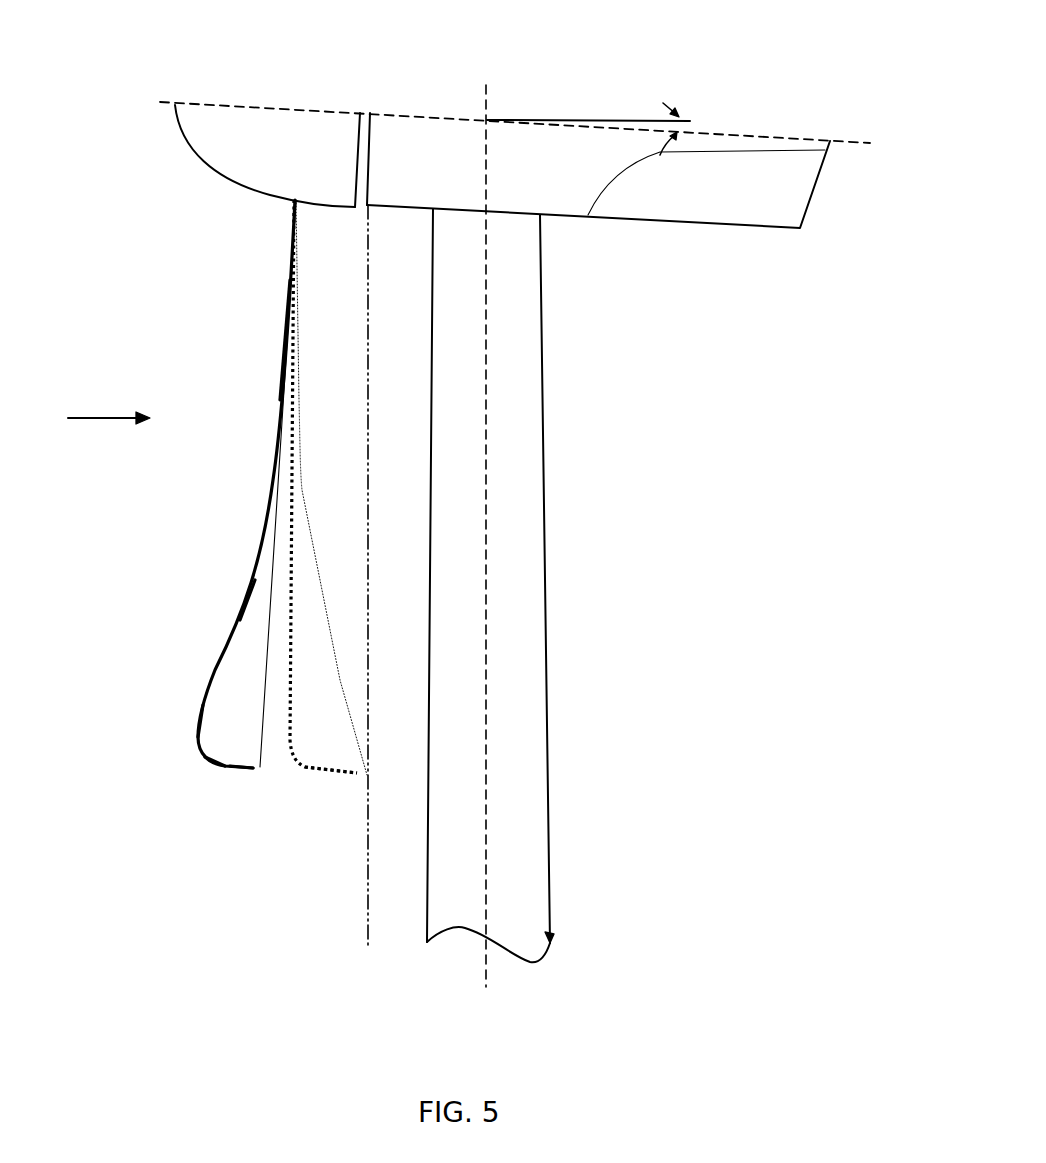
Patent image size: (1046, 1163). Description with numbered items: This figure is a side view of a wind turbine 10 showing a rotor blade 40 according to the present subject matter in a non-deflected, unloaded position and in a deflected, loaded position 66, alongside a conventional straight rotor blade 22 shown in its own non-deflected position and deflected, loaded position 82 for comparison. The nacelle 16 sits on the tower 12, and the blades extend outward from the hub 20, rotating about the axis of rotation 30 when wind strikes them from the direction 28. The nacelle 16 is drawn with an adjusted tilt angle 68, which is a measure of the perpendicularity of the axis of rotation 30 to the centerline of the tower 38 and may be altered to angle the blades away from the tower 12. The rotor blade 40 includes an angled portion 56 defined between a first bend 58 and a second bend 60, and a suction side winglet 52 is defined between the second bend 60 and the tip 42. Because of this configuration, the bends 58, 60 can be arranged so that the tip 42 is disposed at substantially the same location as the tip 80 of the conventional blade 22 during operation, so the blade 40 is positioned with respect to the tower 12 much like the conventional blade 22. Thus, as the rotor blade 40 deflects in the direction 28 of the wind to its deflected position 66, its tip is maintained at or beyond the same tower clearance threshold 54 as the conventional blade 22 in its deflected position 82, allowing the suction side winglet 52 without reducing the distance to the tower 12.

The wind turbine 10 is at (771, 90).
The tower 12 is at (545, 555).
The nacelle 16 is at (752, 185).
The hub 20 is at (247, 122).
The rotor blade 22 is at (270, 596).
The direction 28 is at (105, 418).
The axis of rotation 30 is at (413, 115).
The centerline of the tower 38 is at (489, 957).
The rotor blade 40 is at (219, 666).
The tip 42 is at (250, 767).
The suction side winglet 52 is at (210, 758).
The tower clearance threshold 54 is at (370, 925).
The angled portion 56 is at (233, 627).
The first bend 58 is at (275, 470).
The second bend 60 is at (198, 728).
The deflected/loaded position 66 is at (297, 597).
The tilt angle 68 is at (683, 128).
The tip 80 is at (260, 767).
The deflected/loaded position 82 is at (337, 677).